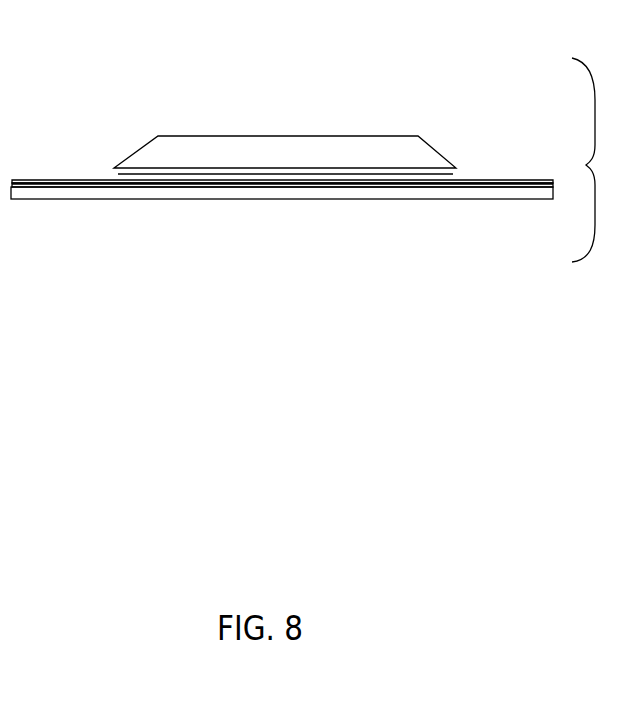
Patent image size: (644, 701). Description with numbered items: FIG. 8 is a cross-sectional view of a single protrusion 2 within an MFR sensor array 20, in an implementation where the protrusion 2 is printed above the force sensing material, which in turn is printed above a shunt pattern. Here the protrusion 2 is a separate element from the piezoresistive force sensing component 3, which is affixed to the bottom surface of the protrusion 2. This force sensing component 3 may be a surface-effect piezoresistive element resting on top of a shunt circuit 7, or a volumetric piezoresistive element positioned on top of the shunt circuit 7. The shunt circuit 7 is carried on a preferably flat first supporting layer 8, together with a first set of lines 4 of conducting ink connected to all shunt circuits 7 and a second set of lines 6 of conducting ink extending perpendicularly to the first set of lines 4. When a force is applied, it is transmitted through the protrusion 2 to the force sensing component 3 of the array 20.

The protrusion 2 is at (160, 158).
The force sensing component 3 is at (350, 170).
The line of conducting ink 4 is at (74, 175).
The line of conducting ink of second set 6 is at (518, 180).
The shunt circuit 7 is at (140, 183).
The first supporting layer 8 is at (78, 192).
The MFR sensor array 20 is at (596, 160).